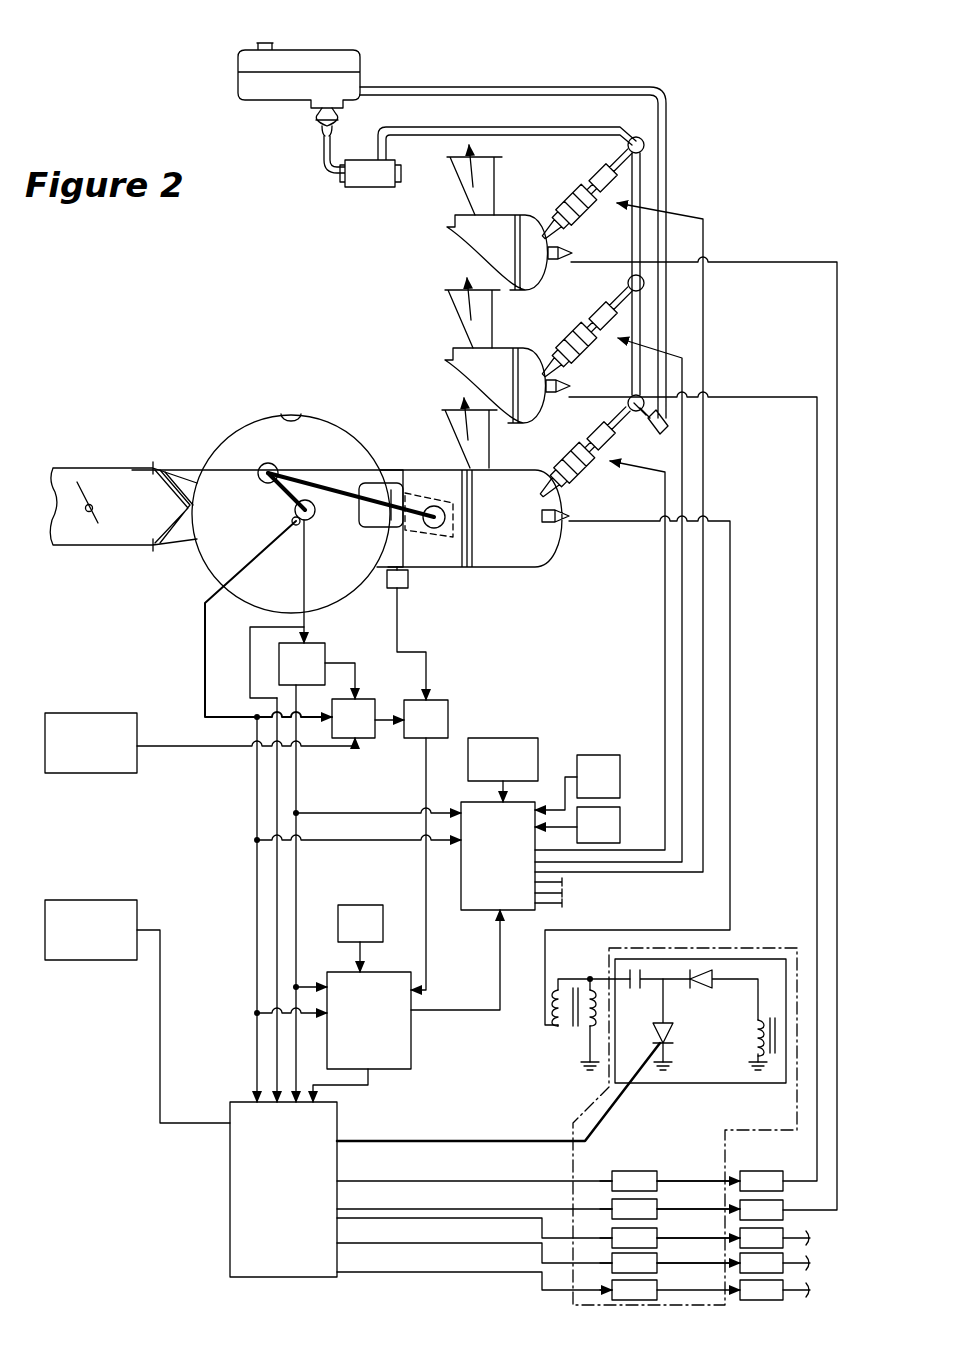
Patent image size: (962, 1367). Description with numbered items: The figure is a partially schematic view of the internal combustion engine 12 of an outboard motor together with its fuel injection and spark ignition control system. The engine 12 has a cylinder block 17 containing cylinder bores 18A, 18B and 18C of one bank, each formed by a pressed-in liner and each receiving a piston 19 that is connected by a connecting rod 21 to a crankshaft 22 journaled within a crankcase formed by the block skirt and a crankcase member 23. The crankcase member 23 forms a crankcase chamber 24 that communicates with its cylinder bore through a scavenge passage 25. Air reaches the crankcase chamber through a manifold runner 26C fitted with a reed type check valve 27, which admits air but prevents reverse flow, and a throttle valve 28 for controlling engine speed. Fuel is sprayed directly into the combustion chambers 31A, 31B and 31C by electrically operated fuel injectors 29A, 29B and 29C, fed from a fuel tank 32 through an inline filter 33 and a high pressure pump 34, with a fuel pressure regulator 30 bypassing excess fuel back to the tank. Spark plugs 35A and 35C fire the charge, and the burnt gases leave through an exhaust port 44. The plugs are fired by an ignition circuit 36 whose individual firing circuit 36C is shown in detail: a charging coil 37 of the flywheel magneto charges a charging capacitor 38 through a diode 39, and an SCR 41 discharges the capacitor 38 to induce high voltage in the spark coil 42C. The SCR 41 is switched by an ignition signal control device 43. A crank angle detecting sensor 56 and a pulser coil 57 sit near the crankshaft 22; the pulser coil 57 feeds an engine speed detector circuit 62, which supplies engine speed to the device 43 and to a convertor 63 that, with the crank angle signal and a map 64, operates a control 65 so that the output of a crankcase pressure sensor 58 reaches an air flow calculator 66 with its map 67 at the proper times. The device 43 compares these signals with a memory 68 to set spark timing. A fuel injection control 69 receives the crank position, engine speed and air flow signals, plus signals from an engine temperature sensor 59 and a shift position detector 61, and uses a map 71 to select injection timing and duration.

The internal combustion engine 12 is at (331, 402).
The cylinder block 17 is at (367, 443).
The cylinder bore 18A is at (456, 222).
The cylinder bore 18B is at (454, 354).
The cylinder bore 18C is at (528, 567).
The piston 19 is at (462, 233).
The connecting rod 21 is at (300, 477).
The crankshaft 22 is at (294, 508).
The crankcase member 23 is at (245, 435).
The crankcase chamber 24 is at (291, 415).
The scavenge passage 25 is at (437, 495).
The manifold runner 26C is at (102, 468).
The reed type check valve 27 is at (184, 478).
The throttle valve 28 is at (105, 530).
The fuel injector 29A is at (592, 188).
The fuel injector 29B is at (570, 318).
The fuel injector 29C is at (592, 466).
The fuel pressure regulator 30 is at (664, 428).
The combustion chamber 31A is at (562, 250).
The combustion chamber 31B is at (558, 386).
The combustion chamber 31C is at (562, 518).
The fuel tank 32 is at (305, 50).
The inline filter 33 is at (320, 126).
The high pressure pump 34 is at (370, 187).
The spark plug 35A is at (565, 258).
The spark plug 35C is at (560, 527).
The ignition circuit 36 is at (652, 1102).
The firing circuit 36C is at (797, 950).
The charging coil 37 is at (735, 1035).
The charging capacitor 38 is at (632, 988).
The diode 39 is at (712, 968).
The SCR 41 is at (674, 1025).
The spark coil 42C is at (573, 1032).
The ignition signal control device 43 is at (342, 1126).
The exhaust port 44 is at (494, 182).
The crank angle detecting sensor 56 is at (294, 527).
The pulser coil 57 is at (310, 523).
The crankcase pressure sensor 58 is at (405, 590).
The engine temperature sensor 59 is at (600, 760).
The shift position detector 61 is at (618, 832).
The engine speed detector circuit 62 is at (310, 652).
The convertor 63 is at (365, 705).
The map 64 is at (115, 714).
The control 65 is at (440, 708).
The air flow calculator 66 is at (398, 1070).
The map 67 is at (360, 908).
The memory 68 is at (115, 900).
The fuel injection control 69 is at (478, 912).
The map 71 is at (530, 740).